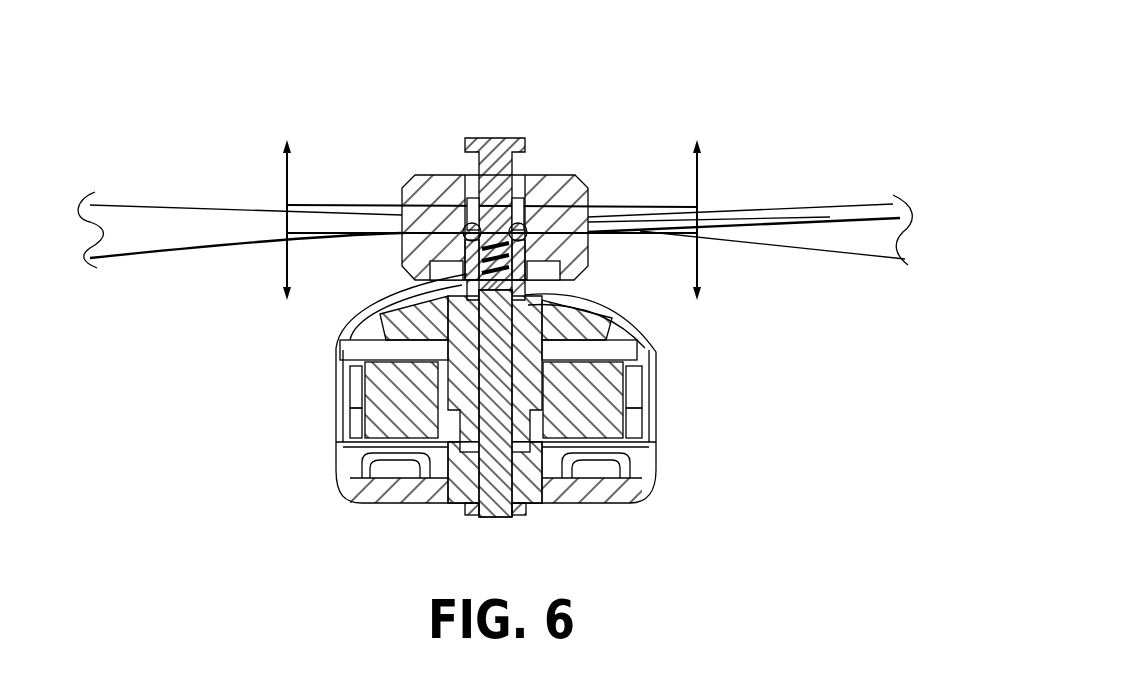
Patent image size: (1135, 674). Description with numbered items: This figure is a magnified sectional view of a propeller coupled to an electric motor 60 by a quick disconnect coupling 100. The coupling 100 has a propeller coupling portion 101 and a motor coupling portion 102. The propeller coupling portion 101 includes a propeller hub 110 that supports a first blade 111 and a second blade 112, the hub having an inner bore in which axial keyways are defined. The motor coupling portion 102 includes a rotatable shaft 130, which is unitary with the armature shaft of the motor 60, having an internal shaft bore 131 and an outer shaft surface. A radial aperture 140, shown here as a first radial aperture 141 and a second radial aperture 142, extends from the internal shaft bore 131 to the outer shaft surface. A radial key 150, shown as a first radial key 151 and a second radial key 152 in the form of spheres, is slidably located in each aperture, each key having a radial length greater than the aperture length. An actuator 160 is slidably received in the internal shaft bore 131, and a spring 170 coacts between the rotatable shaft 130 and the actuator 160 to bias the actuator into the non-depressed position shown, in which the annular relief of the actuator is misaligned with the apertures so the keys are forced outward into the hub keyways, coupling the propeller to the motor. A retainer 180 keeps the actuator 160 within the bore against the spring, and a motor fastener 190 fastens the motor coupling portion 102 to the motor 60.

The coupling 100 is at (722, 22).
The propeller coupling portion 101 is at (396, 87).
The motor coupling portion 102 is at (278, 434).
The propeller hub 110 is at (560, 175).
The first blade 111 is at (160, 217).
The second blade 112 is at (825, 217).
The rotatable shaft 130 is at (343, 336).
The internal shaft bore 131 is at (474, 200).
The radial aperture 140 is at (770, 127).
The first radial aperture 141 is at (532, 250).
The second radial aperture 142 is at (463, 236).
The radial key 150 is at (563, 175).
The first radial key 151 is at (527, 236).
The second radial key 152 is at (466, 225).
The actuator 160 is at (483, 138).
The spring 170 is at (450, 312).
The retainer 180 is at (388, 184).
The motor fastener 190 is at (524, 513).
The electric motor 60 is at (655, 420).